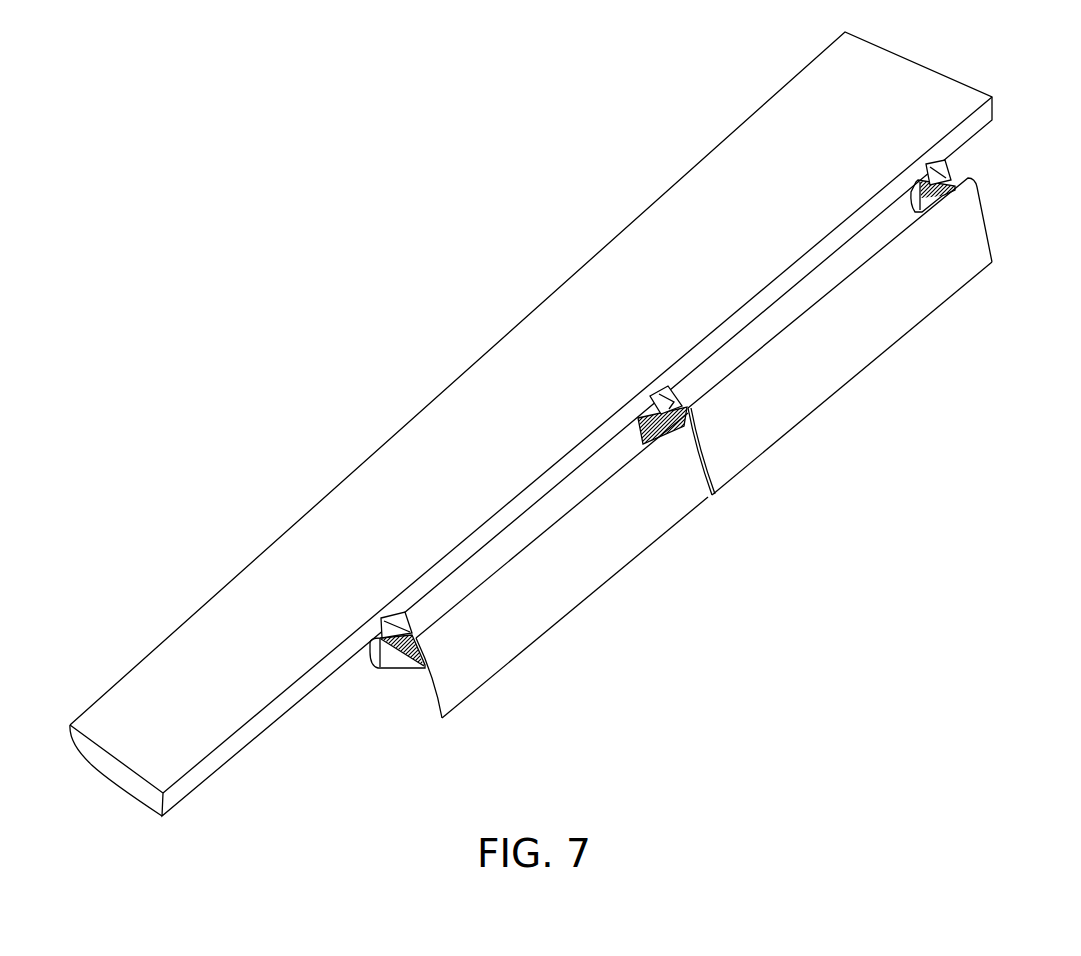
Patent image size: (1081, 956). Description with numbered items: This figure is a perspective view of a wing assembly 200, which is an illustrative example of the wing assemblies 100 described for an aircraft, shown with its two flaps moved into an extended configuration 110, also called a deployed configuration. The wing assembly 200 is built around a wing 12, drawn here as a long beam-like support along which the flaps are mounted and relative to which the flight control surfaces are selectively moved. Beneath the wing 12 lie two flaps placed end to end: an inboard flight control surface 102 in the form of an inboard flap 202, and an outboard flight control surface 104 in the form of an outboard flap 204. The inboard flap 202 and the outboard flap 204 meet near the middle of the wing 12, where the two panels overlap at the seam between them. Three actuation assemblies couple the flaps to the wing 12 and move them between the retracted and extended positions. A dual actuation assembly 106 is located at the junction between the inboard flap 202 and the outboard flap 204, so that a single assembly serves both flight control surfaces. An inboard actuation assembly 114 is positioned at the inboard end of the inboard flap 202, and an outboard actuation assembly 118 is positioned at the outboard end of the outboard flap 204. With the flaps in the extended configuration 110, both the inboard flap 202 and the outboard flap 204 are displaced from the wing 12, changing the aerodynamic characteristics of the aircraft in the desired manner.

The wing 12 is at (560, 162).
The wing assembly 100 is at (707, 407).
The inboard flight control surface 102 is at (833, 396).
The outboard flight control surface 104 is at (557, 626).
The dual actuation assembly 106 is at (662, 386).
The extended configuration 110 is at (747, 508).
The inboard actuation assembly 114 is at (933, 160).
The outboard actuation assembly 118 is at (397, 673).
The wing assembly 200 is at (704, 448).
The inboard flap 202 is at (840, 401).
The outboard flap 204 is at (562, 565).